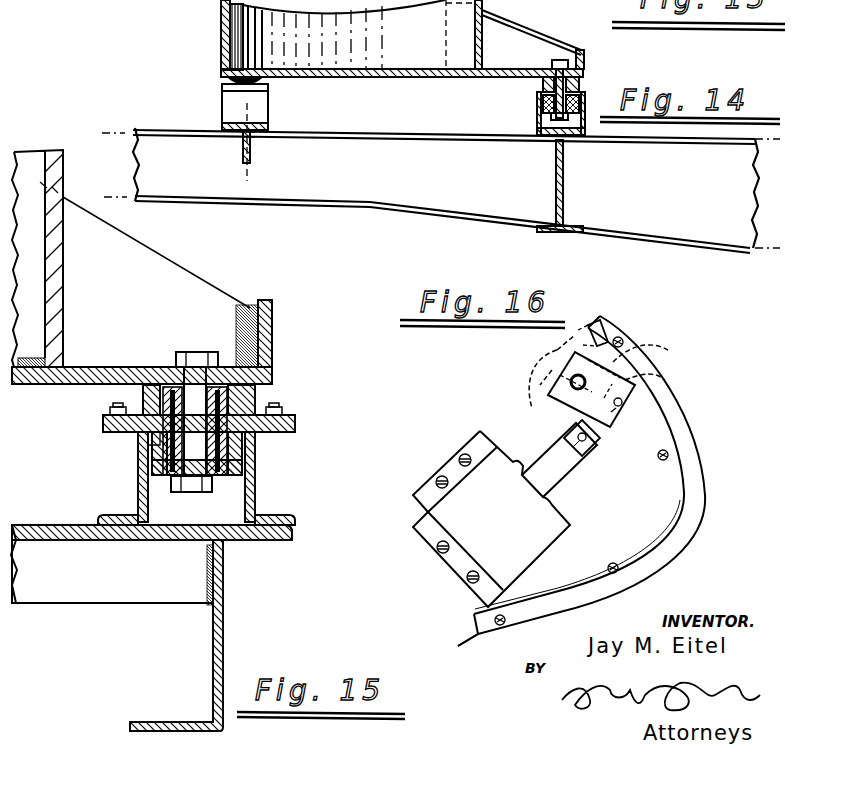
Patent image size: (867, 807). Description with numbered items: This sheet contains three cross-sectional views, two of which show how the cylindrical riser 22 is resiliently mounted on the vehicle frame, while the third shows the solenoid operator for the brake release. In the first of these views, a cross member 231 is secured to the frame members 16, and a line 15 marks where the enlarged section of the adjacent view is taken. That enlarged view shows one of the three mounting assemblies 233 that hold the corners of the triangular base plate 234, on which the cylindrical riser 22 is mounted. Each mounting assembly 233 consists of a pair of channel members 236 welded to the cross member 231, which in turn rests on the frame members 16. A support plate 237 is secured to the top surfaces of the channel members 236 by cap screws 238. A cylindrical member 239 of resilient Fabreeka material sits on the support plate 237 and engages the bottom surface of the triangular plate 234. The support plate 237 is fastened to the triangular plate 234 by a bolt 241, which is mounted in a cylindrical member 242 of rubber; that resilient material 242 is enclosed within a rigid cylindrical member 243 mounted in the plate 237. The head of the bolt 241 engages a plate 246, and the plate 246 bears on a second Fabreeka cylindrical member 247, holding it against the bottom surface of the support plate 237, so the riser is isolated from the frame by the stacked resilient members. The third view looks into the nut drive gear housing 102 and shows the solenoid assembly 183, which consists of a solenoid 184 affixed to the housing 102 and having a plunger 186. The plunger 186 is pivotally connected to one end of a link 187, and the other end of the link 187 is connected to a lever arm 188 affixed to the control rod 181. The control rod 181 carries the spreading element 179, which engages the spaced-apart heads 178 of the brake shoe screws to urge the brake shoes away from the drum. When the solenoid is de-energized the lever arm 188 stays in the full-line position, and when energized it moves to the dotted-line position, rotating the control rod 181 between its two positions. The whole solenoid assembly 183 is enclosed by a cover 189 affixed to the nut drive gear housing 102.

In FIG. 14, the section line 15— 15 is at (247, 181).
In FIG. 14, the frame members 16 is at (357, 182).
In FIG. 15, the frame members 16 is at (224, 653).
In FIG. 15, the cylindrical riser 22 is at (53, 288).
In FIG. 15, the triangular base plate 234 is at (44, 378).
In FIG. 15, the rigid cylindrical member 243 is at (256, 384).
In FIG. 15, the bolt 241 is at (190, 353).
In FIG. 15, the cylindrical member of resilient material 242 is at (223, 380).
In FIG. 15, the cylindrical member of resilient material 239 is at (250, 408).
In FIG. 15, the support plate 237 is at (293, 427).
In FIG. 15, the cap screws 238 is at (115, 410).
In FIG. 15, the mounting assemblies 233 is at (312, 424).
In FIG. 15, the channel members 236 is at (140, 485).
In FIG. 15, the cylindrical member of resilient material 247 is at (150, 447).
In FIG. 15, the plate 246 is at (226, 477).
In FIG. 15, the cross member 231 is at (250, 533).
In FIG. 16, the cover 189 is at (655, 493).
In FIG. 16, the nut drive gear housing 102 is at (467, 648).
In FIG. 16, the solenoid 184 is at (511, 526).
In FIG. 16, the solenoid assembly 183 is at (470, 422).
In FIG. 16, the plunger 186 is at (563, 468).
In FIG. 16, the link 187 is at (604, 430).
In FIG. 16, the lever arm 188 is at (600, 384).
In FIG. 16, the heads 178 is at (560, 407).
In FIG. 16, the spreading element 179 is at (650, 347).
In FIG. 16, the control rod 181 is at (582, 335).